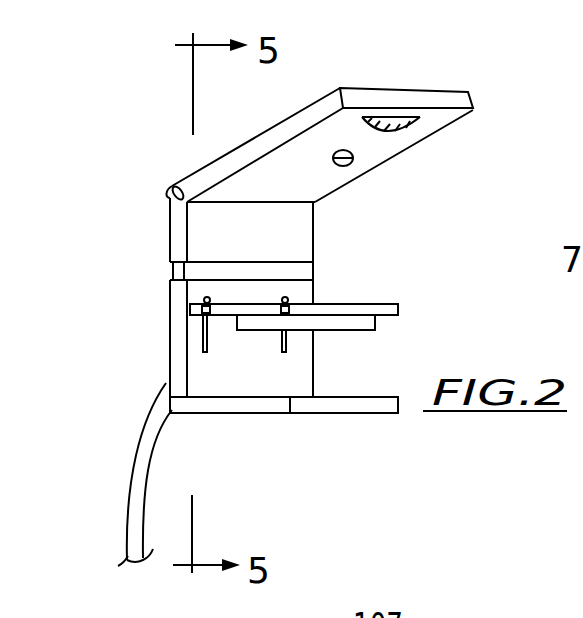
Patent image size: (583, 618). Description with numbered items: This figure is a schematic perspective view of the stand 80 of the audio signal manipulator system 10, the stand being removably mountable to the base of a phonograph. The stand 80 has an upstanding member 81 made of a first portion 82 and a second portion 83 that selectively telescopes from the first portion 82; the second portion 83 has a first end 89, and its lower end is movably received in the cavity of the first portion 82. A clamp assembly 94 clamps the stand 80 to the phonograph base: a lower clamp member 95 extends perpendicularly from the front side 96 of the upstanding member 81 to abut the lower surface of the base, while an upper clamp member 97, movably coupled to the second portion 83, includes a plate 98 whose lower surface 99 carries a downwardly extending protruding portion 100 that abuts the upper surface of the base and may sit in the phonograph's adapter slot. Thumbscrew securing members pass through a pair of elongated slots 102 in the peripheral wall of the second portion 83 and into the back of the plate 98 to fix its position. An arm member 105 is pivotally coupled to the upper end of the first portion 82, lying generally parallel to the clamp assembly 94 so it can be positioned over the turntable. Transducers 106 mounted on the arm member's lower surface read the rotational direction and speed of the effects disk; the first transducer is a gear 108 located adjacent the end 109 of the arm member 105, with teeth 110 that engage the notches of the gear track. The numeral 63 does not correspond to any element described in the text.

The audio signal manipulator system 10 is at (186, 162).
The stand 80 is at (293, 123).
The upstanding member 81 is at (177, 360).
The first portion 82 is at (170, 228).
The second portion 83 is at (308, 295).
The first end 89 is at (172, 400).
The clamp assembly 94 is at (426, 298).
The lower clamp member 95 is at (352, 405).
The front side 96 is at (308, 357).
The upper clamp member 97 is at (380, 305).
The plate 98 is at (200, 307).
The lower surface 99 is at (398, 315).
The protruding portion 100 is at (352, 330).
The elongated slots 102 is at (203, 333).
The arm member 105 is at (252, 148).
The transducers 106 is at (391, 181).
The gear 108 is at (405, 123).
The end 109 is at (470, 92).
The teeth 110 is at (413, 118).
The numeral from adjacent figure 63 is at (521, 599).